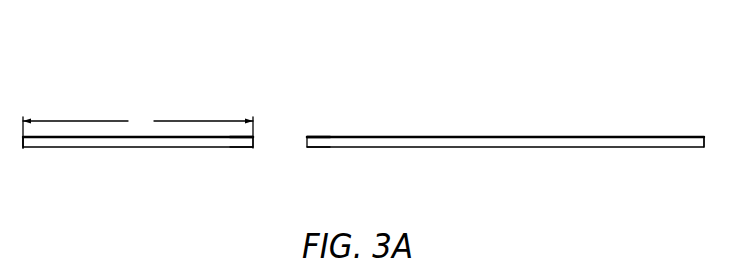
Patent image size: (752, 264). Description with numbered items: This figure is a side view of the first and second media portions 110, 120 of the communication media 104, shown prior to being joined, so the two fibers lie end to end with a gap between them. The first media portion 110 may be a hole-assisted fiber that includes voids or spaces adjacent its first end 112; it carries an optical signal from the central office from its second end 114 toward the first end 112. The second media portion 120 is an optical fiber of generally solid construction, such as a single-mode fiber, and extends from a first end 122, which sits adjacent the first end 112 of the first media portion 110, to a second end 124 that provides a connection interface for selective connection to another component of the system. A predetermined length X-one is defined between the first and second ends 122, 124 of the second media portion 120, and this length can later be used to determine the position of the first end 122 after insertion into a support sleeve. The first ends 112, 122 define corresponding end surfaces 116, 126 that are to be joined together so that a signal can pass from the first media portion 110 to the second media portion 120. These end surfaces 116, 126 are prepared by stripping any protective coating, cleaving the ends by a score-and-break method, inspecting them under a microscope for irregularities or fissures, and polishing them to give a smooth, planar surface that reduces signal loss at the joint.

The communication media 104 is at (327, 64).
The first media portion 110 is at (508, 135).
The first end of the first media portion 112 is at (307, 148).
The second end of the first media portion 114 is at (690, 144).
The end surface of the first media portion 116 is at (307, 137).
The second media portion 120 is at (113, 136).
The first end of the second media portion 122 is at (254, 148).
The second end of the second media portion 124 is at (33, 146).
The end surface of the second media portion 126 is at (254, 137).